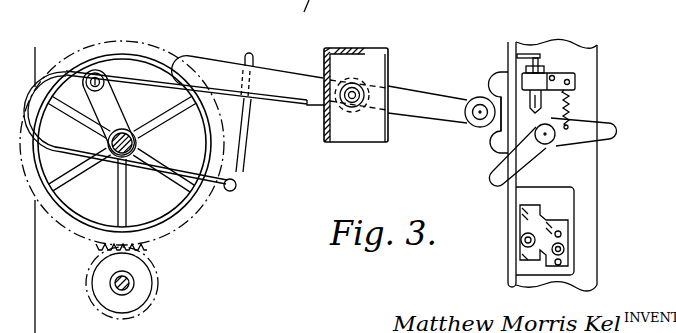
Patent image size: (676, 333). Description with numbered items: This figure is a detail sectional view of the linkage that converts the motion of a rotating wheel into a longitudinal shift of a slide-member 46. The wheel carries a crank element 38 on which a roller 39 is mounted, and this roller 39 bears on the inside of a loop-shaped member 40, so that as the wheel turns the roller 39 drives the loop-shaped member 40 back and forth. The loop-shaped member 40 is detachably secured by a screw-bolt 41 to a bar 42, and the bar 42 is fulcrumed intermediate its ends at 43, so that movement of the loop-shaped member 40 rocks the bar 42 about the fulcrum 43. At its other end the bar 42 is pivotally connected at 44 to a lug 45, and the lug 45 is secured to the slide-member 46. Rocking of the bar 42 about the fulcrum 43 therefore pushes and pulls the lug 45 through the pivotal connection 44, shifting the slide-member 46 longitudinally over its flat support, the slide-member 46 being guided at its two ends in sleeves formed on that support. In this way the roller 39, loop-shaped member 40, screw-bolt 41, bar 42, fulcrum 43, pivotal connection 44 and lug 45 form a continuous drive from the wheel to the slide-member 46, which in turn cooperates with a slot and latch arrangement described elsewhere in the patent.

The crank arm 38 is at (105, 112).
The roller 39 is at (97, 71).
The loop-shaped member 40 is at (226, 87).
The screw-bolt 41 is at (240, 137).
The bar 42 is at (430, 112).
The fulcrum 43 is at (360, 92).
The pivotal connection 44 is at (483, 119).
The lug 45 is at (497, 102).
The slide-member 46 is at (597, 87).